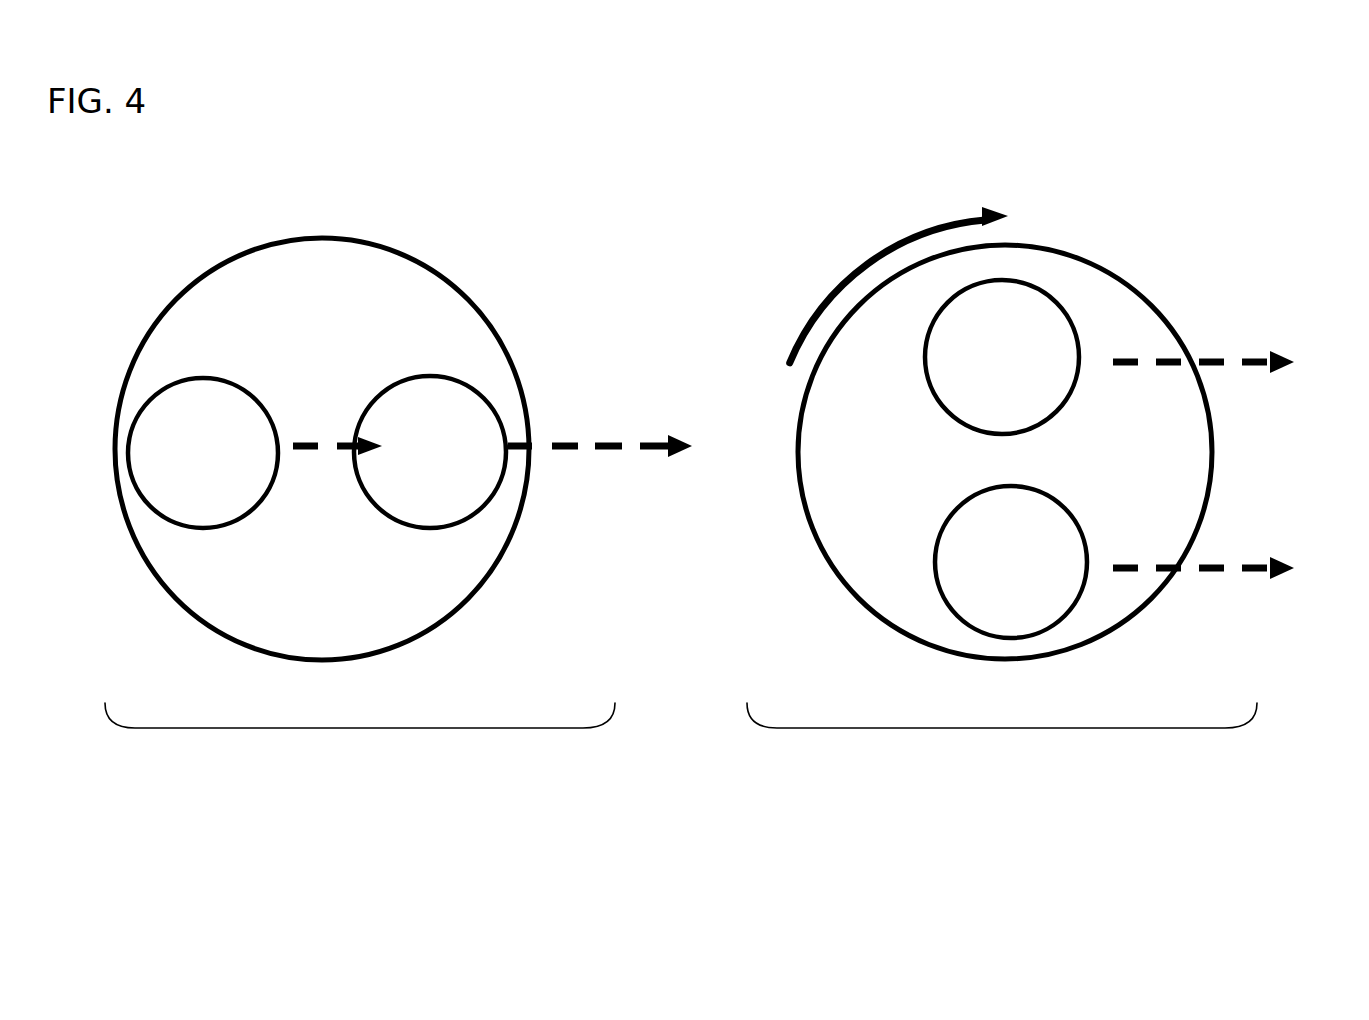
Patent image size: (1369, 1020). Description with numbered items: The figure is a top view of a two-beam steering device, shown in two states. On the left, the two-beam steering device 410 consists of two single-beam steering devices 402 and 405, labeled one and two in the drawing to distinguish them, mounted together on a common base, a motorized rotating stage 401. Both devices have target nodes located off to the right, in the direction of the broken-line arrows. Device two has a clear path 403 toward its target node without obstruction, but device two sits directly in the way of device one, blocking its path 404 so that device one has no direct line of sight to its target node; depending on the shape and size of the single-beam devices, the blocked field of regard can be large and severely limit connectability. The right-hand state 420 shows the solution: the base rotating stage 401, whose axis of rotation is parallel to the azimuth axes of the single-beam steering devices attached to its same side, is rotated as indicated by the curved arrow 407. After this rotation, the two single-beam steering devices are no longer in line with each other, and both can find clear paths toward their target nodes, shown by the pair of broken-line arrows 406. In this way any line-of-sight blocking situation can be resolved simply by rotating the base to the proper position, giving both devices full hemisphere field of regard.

The motorized rotating stage 401 is at (833, 328).
The single-beam steering device 402 is at (209, 376).
The clear path 403 is at (570, 442).
The blocked path 404 is at (307, 448).
The single-beam steering device 405 is at (935, 558).
The clear paths toward the target nodes 406 is at (1218, 363).
The rotation of the base rotating stage 407 is at (868, 258).
The two-beam steering device 410 is at (360, 748).
The rotated configuration 420 is at (1002, 748).